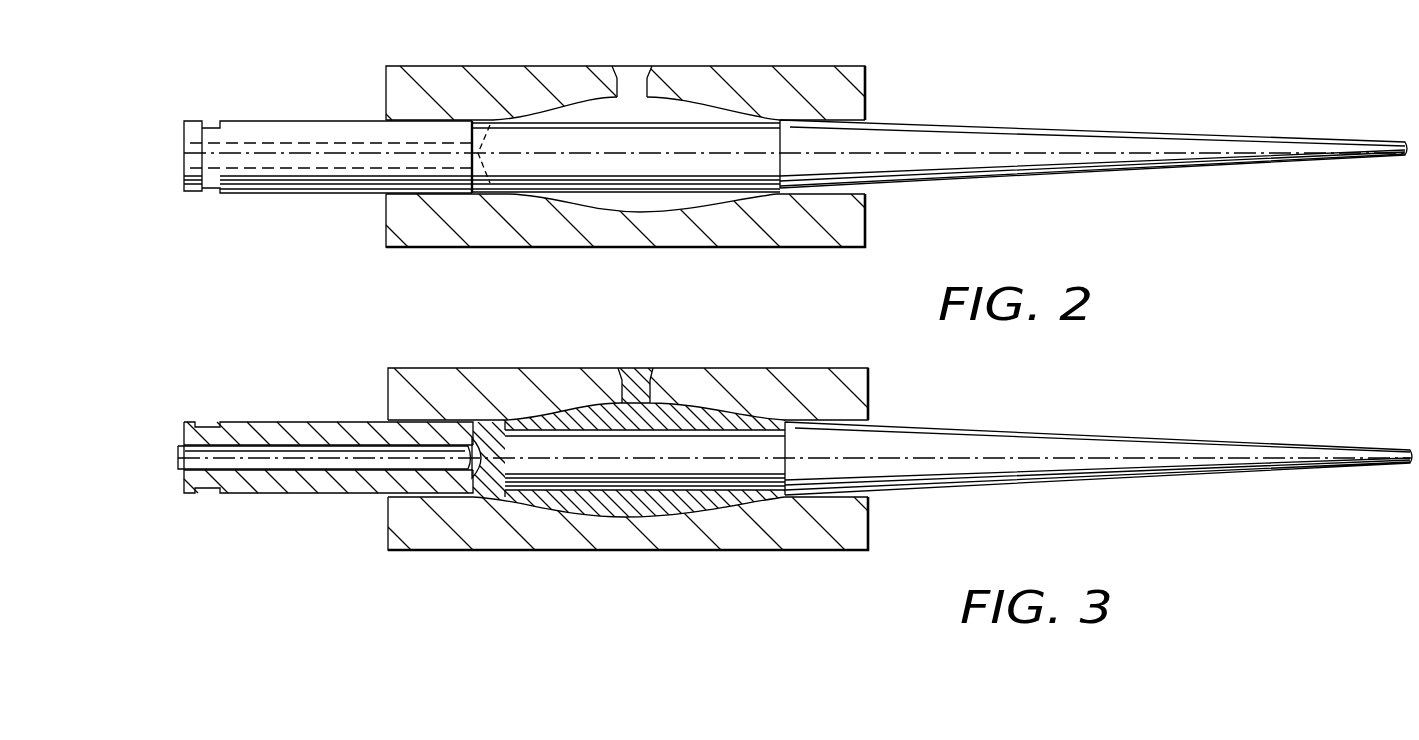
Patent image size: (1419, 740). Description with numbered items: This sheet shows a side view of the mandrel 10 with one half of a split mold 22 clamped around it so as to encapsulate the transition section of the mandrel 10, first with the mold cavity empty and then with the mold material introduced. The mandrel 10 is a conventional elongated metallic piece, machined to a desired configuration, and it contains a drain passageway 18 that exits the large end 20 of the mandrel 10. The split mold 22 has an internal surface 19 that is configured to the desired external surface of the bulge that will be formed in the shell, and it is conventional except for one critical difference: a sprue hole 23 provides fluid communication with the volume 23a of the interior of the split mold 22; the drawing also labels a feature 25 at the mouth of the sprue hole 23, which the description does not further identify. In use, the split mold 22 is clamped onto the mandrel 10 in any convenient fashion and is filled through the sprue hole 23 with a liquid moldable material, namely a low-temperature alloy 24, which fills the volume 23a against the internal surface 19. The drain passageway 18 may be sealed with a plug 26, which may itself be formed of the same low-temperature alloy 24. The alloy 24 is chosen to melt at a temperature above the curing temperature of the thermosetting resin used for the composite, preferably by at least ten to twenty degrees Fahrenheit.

In FIG. 2, the mandrel 10 is at (331, 116).
In FIG. 3, the mandrel 10 is at (279, 415).
In FIG. 2, the drain passageway 18 is at (250, 152).
In FIG. 2, the internal surface 19 is at (692, 112).
In FIG. 2, the large end 20 is at (191, 193).
In FIG. 2, the split mold 22 is at (866, 103).
In FIG. 3, the split mold 22 is at (470, 383).
In FIG. 2, the sprue hole 23 is at (624, 78).
In FIG. 2, the volume 23a is at (640, 200).
In FIG. 3, the low-temperature alloy 24 is at (700, 500).
In FIG. 2, the gate 25 is at (641, 66).
In FIG. 3, the plug 26 is at (342, 462).